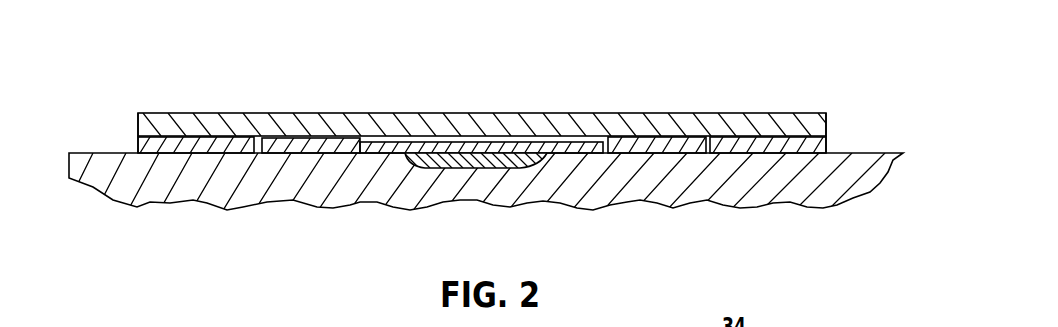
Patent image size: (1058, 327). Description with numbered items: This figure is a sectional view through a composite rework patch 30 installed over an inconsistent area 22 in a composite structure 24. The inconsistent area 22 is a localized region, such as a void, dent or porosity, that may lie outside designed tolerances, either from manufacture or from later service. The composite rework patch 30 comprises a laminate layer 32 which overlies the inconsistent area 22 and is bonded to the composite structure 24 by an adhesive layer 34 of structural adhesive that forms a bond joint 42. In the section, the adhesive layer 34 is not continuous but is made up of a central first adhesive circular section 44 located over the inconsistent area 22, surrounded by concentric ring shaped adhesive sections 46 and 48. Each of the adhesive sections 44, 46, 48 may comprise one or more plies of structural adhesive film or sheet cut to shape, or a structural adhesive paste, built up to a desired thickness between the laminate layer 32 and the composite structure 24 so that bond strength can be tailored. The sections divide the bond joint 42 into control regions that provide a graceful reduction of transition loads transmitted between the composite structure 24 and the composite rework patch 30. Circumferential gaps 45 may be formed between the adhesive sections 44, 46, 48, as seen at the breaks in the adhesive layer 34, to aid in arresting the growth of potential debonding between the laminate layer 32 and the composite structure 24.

The inconsistent area 22 is at (510, 162).
The composite structure 24 is at (153, 180).
The composite rework patch 30 is at (723, 60).
The laminate layer 32 is at (176, 133).
The adhesive layer 34 is at (848, 132).
The bond joint 42 is at (114, 135).
The first adhesive circular section 44 is at (547, 158).
The gap segments in lower layer 45 is at (358, 124).
The ring shaped adhesive section 46 is at (655, 148).
The ring shaped adhesive section 48 is at (774, 147).